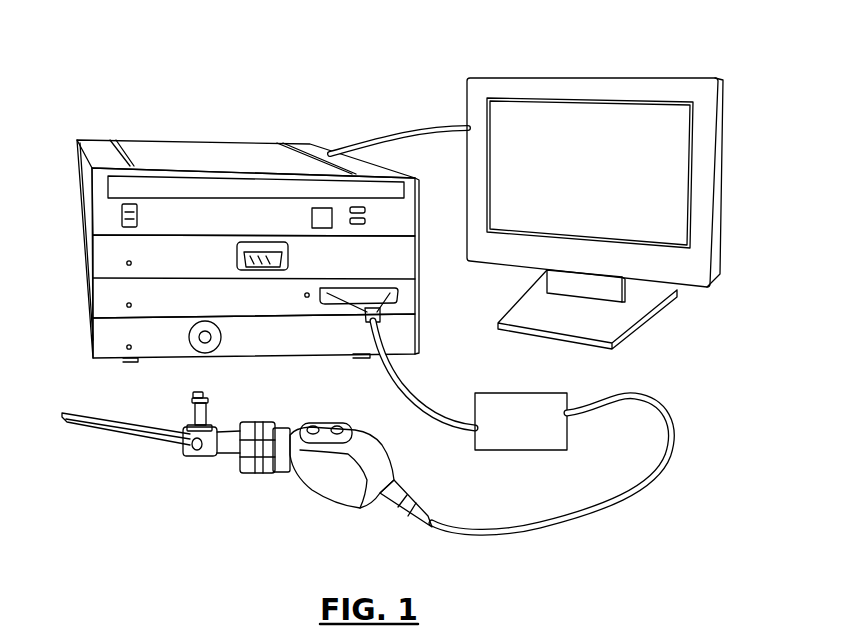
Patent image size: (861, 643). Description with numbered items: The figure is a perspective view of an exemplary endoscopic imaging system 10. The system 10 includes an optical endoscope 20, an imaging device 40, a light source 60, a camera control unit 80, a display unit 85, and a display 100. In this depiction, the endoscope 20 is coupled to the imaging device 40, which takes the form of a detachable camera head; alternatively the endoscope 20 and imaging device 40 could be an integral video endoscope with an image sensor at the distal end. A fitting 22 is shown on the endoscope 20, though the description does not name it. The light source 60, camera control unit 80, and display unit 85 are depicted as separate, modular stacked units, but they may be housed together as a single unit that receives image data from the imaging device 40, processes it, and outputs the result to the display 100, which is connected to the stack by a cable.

The endoscopic imaging system 10 is at (141, 38).
The optical endoscope 20 is at (124, 430).
The stopcock valve 22 is at (193, 413).
The imaging device 40 is at (327, 482).
The light source 60 is at (120, 337).
The camera control unit (CCU) 80 is at (122, 298).
The display unit 85 is at (127, 182).
The display 100 is at (607, 80).